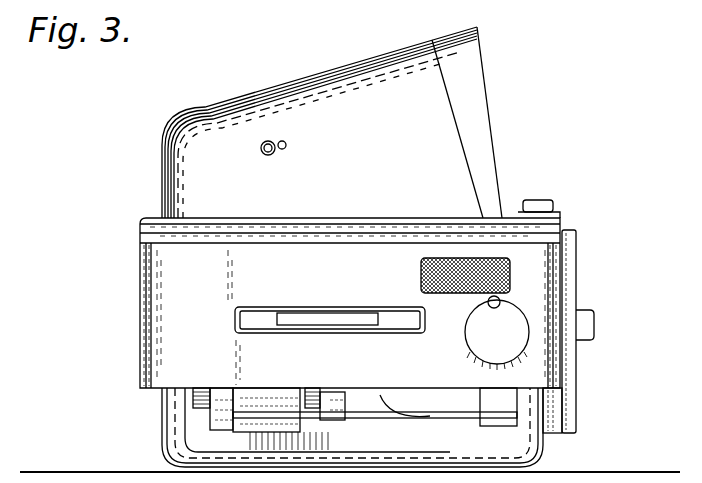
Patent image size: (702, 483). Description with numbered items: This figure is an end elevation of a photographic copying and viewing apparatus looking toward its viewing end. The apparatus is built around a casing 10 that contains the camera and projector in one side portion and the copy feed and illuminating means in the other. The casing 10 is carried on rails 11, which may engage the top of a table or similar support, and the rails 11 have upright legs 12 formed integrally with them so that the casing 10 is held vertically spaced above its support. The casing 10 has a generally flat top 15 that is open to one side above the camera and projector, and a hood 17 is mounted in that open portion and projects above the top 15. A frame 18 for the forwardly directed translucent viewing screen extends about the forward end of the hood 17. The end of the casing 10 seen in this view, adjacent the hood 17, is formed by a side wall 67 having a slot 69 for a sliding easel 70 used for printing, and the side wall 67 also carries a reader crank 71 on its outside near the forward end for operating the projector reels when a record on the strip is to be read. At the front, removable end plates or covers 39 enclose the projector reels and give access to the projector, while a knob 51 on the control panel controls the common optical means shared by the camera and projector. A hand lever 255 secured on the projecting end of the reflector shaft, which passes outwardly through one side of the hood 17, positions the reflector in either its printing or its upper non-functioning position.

The casing 10 is at (136, 268).
The rails 11 is at (310, 468).
The upright legs 12 is at (160, 412).
The flat top 15 is at (515, 209).
The hood 17 is at (305, 76).
The frame 18 is at (467, 82).
The removable end plates or covers 39 is at (577, 248).
The knob 51 is at (596, 337).
The side wall 67 is at (190, 268).
The slot 69 is at (401, 325).
The sliding easel 70 is at (312, 318).
The reader crank 71 is at (499, 304).
The hand lever 255 is at (285, 146).